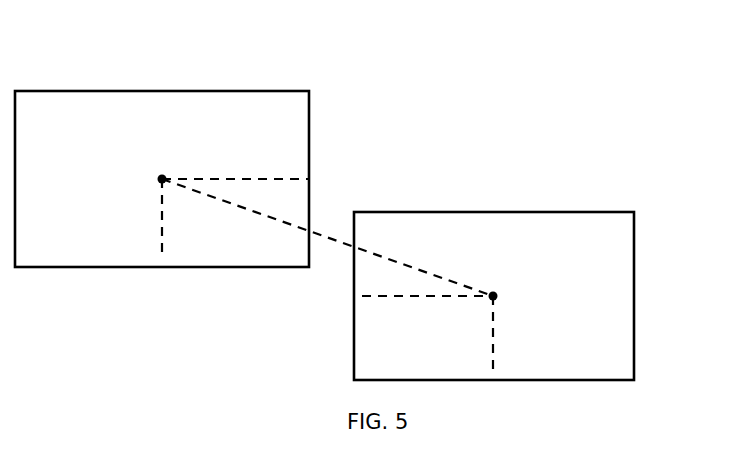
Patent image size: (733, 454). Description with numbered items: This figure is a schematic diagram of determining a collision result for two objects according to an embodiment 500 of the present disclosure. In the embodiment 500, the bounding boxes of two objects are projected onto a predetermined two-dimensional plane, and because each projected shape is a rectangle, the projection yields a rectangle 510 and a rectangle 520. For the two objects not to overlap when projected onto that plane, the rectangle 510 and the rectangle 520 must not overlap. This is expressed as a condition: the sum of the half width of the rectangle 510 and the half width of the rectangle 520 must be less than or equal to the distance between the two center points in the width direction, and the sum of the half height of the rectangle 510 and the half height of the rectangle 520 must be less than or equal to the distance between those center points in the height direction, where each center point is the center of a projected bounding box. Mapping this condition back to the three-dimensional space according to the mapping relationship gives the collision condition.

The embodiment 500 is at (73, 35).
The rectangle 510 is at (255, 90).
The rectangle 520 is at (588, 212).